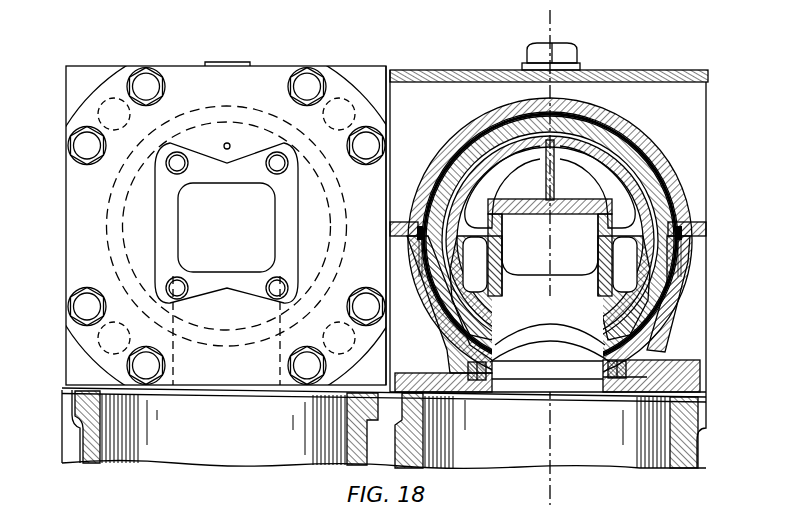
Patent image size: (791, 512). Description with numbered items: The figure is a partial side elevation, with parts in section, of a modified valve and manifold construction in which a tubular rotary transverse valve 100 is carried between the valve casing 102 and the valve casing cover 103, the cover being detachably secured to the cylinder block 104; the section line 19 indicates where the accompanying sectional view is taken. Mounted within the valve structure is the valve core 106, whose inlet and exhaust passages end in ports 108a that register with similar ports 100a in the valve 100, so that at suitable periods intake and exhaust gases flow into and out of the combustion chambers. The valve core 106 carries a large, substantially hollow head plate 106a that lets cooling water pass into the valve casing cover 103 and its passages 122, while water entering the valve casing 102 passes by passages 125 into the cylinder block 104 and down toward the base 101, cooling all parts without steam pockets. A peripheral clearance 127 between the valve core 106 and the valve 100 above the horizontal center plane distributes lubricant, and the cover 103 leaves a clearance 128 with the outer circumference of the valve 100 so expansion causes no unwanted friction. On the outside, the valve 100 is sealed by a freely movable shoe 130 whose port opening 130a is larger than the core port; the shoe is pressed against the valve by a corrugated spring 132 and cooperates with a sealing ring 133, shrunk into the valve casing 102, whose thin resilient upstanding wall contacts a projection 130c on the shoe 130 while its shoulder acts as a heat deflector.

The section line 19- 19 is at (578, 25).
The valve 100 is at (622, 138).
The ports 100a is at (545, 331).
The base 101 is at (627, 464).
The valve casing 102 is at (700, 381).
The valve casing cover 103 is at (700, 171).
The cylinder block 104 is at (693, 423).
The valve core 106 is at (553, 212).
The head plate 106a is at (84, 343).
The ports 108a is at (515, 328).
The passages 122 is at (420, 84).
The passages 125 is at (63, 410).
The peripheral clearance 127 is at (528, 132).
The clearance 128 is at (517, 110).
The shoe 130 is at (637, 323).
The port opening 130a is at (508, 356).
The projection 130c is at (645, 371).
The corrugated spring 132 is at (473, 380).
The sealing ring 133 is at (602, 378).